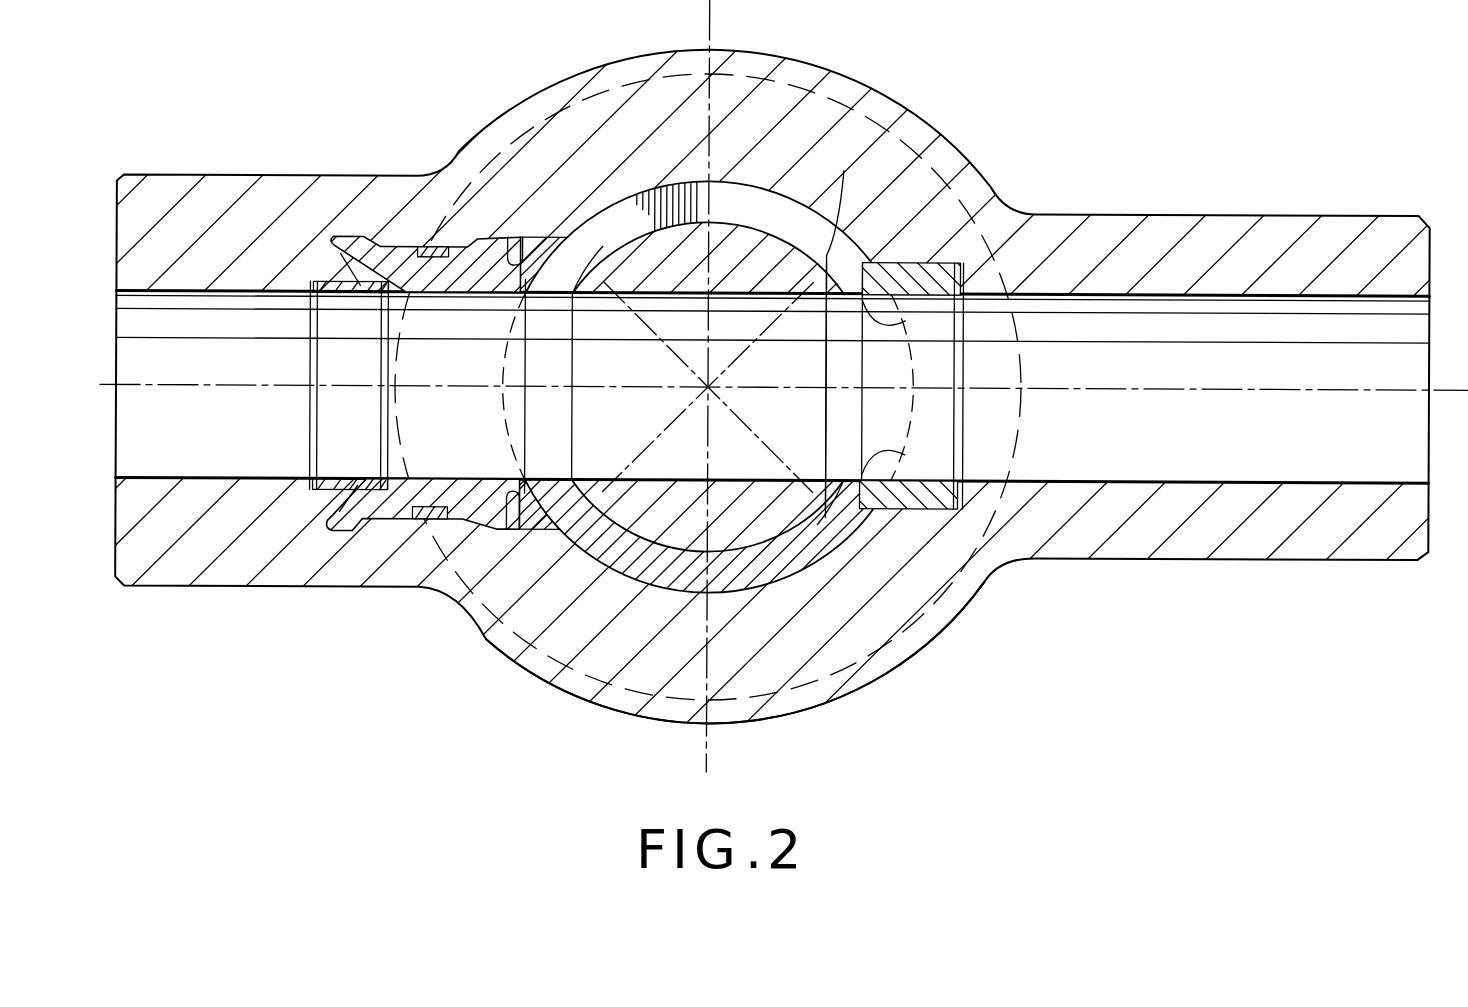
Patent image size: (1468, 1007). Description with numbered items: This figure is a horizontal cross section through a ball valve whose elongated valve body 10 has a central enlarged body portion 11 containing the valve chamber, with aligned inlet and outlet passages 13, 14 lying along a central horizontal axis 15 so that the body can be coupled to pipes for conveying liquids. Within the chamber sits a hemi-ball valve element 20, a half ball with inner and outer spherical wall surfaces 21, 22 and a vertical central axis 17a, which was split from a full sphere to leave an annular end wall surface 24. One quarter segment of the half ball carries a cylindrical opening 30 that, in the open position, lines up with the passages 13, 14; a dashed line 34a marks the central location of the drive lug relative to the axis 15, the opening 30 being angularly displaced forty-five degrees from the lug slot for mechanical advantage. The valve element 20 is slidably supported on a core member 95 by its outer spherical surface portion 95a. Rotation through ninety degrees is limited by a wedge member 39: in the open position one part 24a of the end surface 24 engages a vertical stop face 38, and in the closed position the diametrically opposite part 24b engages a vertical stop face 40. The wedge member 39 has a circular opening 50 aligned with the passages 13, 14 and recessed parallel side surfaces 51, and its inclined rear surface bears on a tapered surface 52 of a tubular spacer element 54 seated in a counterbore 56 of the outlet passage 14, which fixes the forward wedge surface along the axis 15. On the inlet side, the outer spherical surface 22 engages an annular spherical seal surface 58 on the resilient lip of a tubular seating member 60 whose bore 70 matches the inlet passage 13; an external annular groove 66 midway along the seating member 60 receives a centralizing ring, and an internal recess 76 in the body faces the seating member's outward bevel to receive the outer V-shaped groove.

The valve body 10 is at (1258, 205).
The central enlarged body portion 11 is at (490, 652).
The inlet passage 13 is at (225, 294).
The outlet passage 14 is at (1238, 483).
The central horizontal axis 15 is at (216, 392).
The vertical central axis 17a is at (790, 198).
The valve element 20 is at (660, 590).
The inner spherical wall surface 21 is at (748, 538).
The outer spherical wall surface 22 is at (735, 592).
The annular end wall surface 24 is at (580, 265).
The end surface part 24a is at (868, 517).
The end surface part 24b is at (590, 262).
The cylindrical opening 30 is at (522, 332).
The dashed line 34a is at (633, 453).
The vertical stop face 38 is at (836, 520).
The wedge member 39 is at (845, 240).
The vertical stop face 40 is at (827, 255).
The circular opening 50 is at (826, 322).
The parallel side surfaces 51 is at (905, 318).
The tapered surface 52 is at (822, 472).
The tubular spacer element 54 is at (930, 262).
The counterbore 56 is at (962, 505).
The annular spherical seal surface 58 is at (556, 480).
The tubular seating member 60 is at (472, 500).
The external annular groove 66 is at (430, 248).
The bore 70 is at (413, 276).
The internal recess 76 is at (348, 526).
The core member 95 is at (733, 213).
The outer spherical surface portion 95a is at (540, 648).